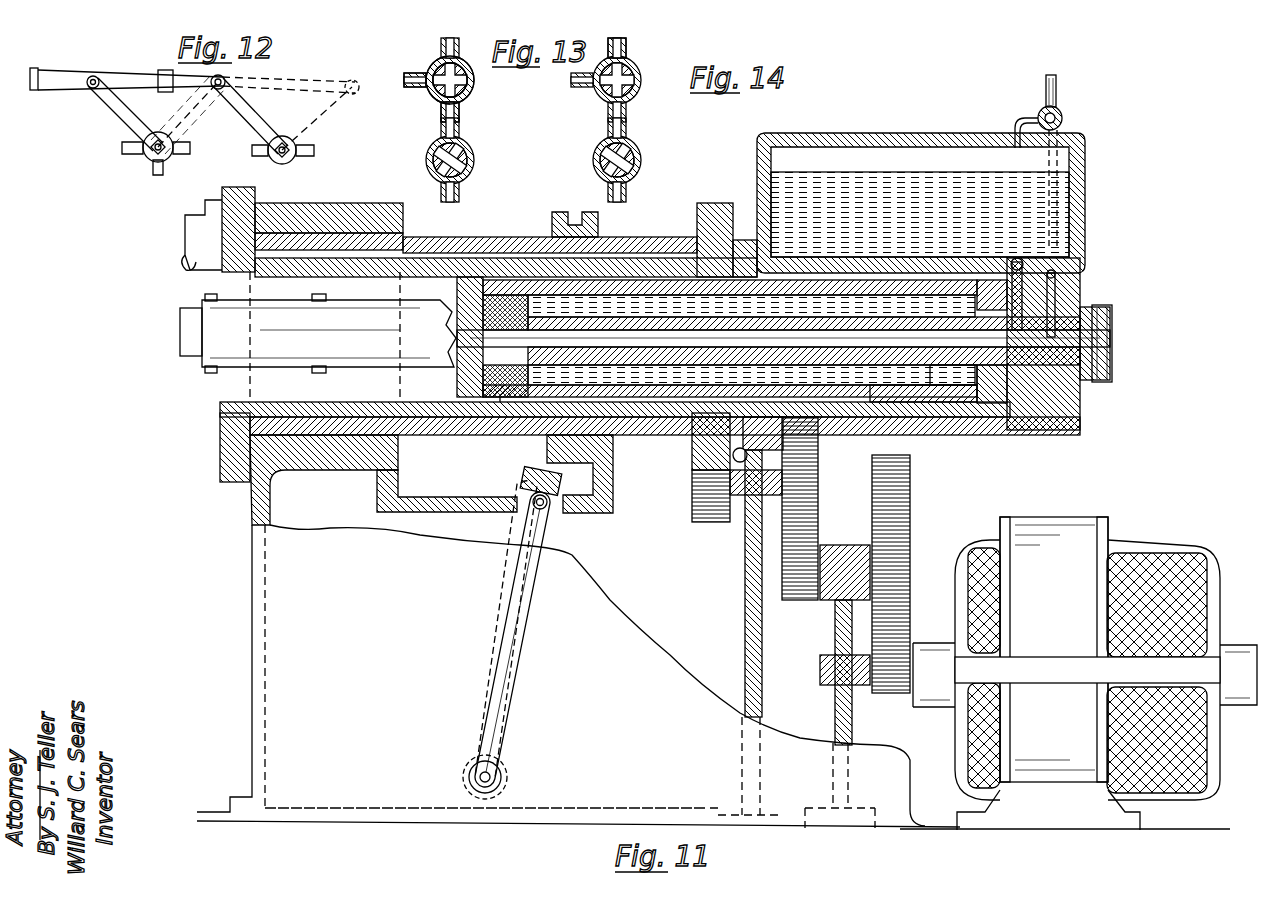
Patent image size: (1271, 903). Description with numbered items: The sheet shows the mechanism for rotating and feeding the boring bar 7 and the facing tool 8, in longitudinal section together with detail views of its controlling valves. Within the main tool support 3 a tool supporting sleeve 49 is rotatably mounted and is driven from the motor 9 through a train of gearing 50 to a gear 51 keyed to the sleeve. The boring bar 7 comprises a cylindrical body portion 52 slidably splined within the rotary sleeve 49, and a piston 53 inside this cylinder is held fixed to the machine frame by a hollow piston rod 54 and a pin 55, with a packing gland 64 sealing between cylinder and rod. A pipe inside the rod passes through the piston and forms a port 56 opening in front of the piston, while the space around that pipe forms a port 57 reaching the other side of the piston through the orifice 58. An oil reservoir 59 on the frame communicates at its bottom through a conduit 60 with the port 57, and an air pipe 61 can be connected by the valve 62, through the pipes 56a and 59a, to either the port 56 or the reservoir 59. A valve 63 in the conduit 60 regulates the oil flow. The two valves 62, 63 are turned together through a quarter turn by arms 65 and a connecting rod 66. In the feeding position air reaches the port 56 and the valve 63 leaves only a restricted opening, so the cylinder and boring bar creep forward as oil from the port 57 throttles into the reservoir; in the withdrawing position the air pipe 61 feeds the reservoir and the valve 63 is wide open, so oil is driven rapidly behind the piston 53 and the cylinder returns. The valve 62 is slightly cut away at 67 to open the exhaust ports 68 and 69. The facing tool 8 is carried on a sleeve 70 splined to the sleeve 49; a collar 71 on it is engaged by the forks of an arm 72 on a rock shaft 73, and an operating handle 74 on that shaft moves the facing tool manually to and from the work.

In FIG. 11, the tool support 3 is at (315, 592).
In FIG. 11, the boring bar 7 is at (186, 329).
In FIG. 11, the facing tool 8 is at (188, 266).
In FIG. 11, the motor 9 is at (1062, 540).
In FIG. 11, the tool supporting sleeve 49 is at (222, 407).
In FIG. 11, the train of gearing 50 is at (820, 524).
In FIG. 11, the gear 51 is at (713, 202).
In FIG. 11, the cylindrical body portion 52 is at (912, 432).
In FIG. 11, the piston 53 is at (505, 400).
In FIG. 11, the piston rod 54 is at (1052, 395).
In FIG. 11, the pin 55 is at (1098, 384).
In FIG. 11, the port 56 is at (498, 333).
In FIG. 13, the pipe 56a is at (462, 108).
In FIG. 11, the pipe 56a is at (1058, 289).
In FIG. 11, the port 57 is at (648, 437).
In FIG. 11, the orifice 58 is at (532, 295).
In FIG. 11, the oil reservoir 59 is at (931, 133).
In FIG. 13, the pipe 59a is at (414, 87).
In FIG. 11, the pipe 59a is at (1015, 126).
In FIG. 13, the conduit 60 is at (440, 130).
In FIG. 11, the conduit 60 is at (1010, 301).
In FIG. 13, the air pipe 61 is at (444, 44).
In FIG. 14, the air pipe 61 is at (624, 50).
In FIG. 11, the air pipe 61 is at (1058, 80).
In FIG. 12, the valve 62 is at (150, 158).
In FIG. 13, the valve 62 is at (592, 95).
In FIG. 11, the valve 62 is at (1063, 118).
In FIG. 12, the valve 63 is at (270, 156).
In FIG. 13, the valve 63 is at (592, 158).
In FIG. 11, the valve 63 is at (1024, 268).
In FIG. 11, the packing gland 64 is at (948, 403).
In FIG. 12, the arms 65 is at (118, 108).
In FIG. 12, the connecting rod 66 is at (74, 80).
In FIG. 13, the cut away portion 67 is at (436, 72).
In FIG. 13, the exhaust port 68 is at (437, 60).
In FIG. 13, the exhaust port 69 is at (432, 100).
In FIG. 11, the sleeve 70 is at (222, 440).
In FIG. 11, the collar 71 is at (602, 494).
In FIG. 11, the arm 72 is at (562, 534).
In FIG. 11, the rock shaft 73 is at (508, 778).
In FIG. 11, the operating handle 74 is at (510, 656).